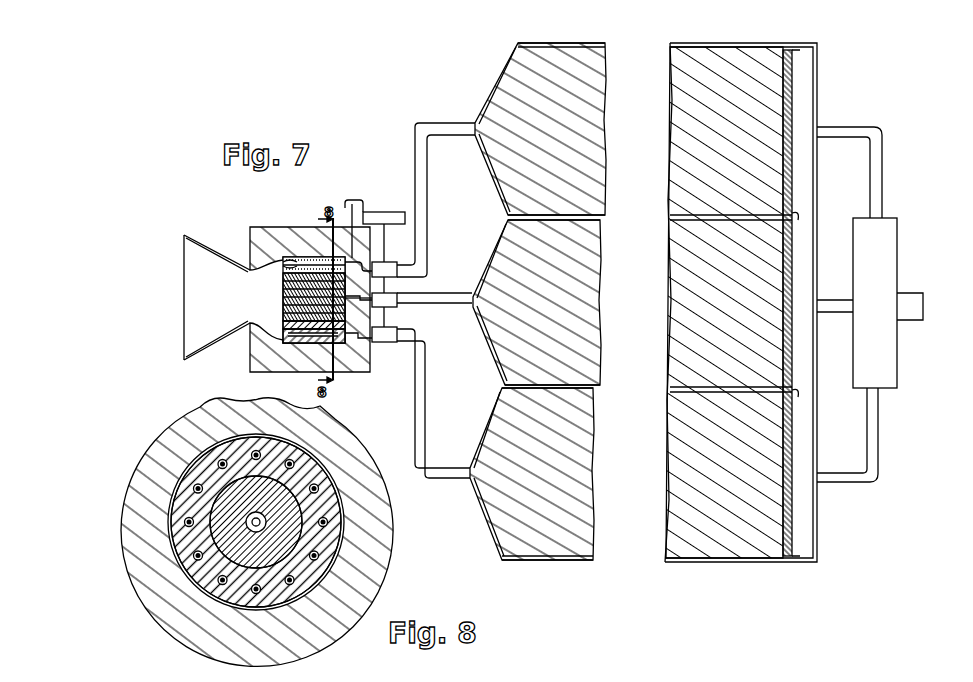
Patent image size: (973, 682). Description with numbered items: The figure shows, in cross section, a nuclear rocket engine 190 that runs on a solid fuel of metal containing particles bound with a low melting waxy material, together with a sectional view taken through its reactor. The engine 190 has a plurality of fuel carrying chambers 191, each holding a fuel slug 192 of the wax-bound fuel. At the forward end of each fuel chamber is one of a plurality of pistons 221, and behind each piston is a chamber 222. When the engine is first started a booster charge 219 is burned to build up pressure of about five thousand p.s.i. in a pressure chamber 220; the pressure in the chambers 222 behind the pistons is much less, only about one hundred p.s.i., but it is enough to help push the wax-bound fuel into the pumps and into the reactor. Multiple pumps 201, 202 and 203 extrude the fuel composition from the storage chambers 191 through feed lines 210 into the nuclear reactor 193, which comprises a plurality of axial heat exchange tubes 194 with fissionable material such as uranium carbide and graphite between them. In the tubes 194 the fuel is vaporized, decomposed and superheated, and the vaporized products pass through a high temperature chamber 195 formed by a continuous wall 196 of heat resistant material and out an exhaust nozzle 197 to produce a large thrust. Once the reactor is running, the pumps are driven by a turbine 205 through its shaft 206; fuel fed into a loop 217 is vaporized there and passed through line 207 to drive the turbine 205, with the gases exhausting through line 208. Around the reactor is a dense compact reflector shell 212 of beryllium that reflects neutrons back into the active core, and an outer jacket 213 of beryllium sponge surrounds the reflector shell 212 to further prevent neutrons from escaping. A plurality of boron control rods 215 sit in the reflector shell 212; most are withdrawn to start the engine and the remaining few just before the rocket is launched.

In FIG. 7, the nuclear rocket engine 190 is at (592, 303).
In FIG. 7, the fuel carrying chambers 191 is at (548, 43).
In FIG. 7, the fuel slug 192 is at (606, 102).
In FIG. 7, the nuclear reactor 193 is at (306, 285).
In FIG. 8, the nuclear reactor 193 is at (258, 531).
In FIG. 7, the axial tubes 194 is at (283, 318).
In FIG. 8, the axial tubes 194 is at (230, 535).
In FIG. 7, the high temperature chamber 195 is at (212, 343).
In FIG. 7, the continuous wall 196 is at (231, 336).
In FIG. 8, the continuous wall 196 is at (341, 488).
In FIG. 7, the exhaust nozzle 197 is at (193, 308).
In FIG. 7, the pump 201 is at (385, 262).
In FIG. 7, the pump 202 is at (397, 297).
In FIG. 7, the pump 203 is at (397, 329).
In FIG. 7, the turbine 205 is at (388, 212).
In FIG. 7, the shaft 206 is at (385, 240).
In FIG. 7, the line 207 is at (350, 231).
In FIG. 7, the line 208 is at (350, 202).
In FIG. 7, the feed lines 210 is at (355, 296).
In FIG. 8, the reflector shell 212 is at (343, 550).
In FIG. 7, the outer jacket 213 is at (271, 228).
In FIG. 8, the outer jacket 213 is at (328, 422).
In FIG. 7, the boron control rods 215 is at (295, 342).
In FIG. 8, the boron control rods 215 is at (195, 486).
In FIG. 7, the loop 217 is at (287, 262).
In FIG. 7, the booster charge 219 is at (910, 293).
In FIG. 7, the pressure chamber 220 is at (898, 240).
In FIG. 7, the pistons 221 is at (792, 80).
In FIG. 7, the chambers 222 is at (762, 302).